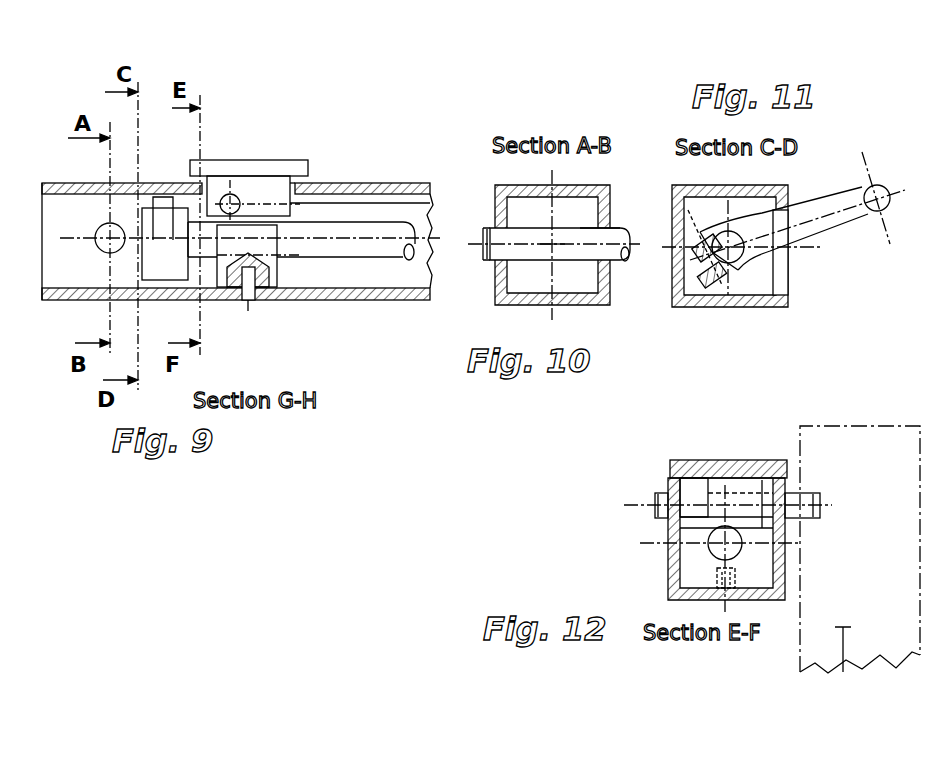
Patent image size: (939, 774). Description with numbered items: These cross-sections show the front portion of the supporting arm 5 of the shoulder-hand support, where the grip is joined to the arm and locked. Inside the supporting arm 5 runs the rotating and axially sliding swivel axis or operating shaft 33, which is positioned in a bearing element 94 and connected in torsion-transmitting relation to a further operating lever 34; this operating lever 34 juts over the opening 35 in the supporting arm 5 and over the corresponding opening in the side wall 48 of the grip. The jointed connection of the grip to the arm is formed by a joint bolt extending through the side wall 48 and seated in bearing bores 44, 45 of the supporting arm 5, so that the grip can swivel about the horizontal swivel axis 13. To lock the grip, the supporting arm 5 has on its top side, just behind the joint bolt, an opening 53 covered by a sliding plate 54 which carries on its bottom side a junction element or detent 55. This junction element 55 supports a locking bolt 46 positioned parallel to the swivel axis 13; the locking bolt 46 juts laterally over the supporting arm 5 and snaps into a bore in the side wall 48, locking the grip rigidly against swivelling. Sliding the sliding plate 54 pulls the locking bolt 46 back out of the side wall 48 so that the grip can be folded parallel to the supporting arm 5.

In FIG. 9, the supporting arm 5 is at (383, 183).
In FIG. 10, the supporting arm 5 is at (495, 298).
In FIG. 11, the supporting arm 5 is at (786, 300).
In FIG. 12, the supporting arm 5 is at (668, 580).
In FIG. 9, the swivel axis 13 is at (102, 243).
In FIG. 10, the swivel axis 13 is at (572, 253).
In FIG. 9, the swivel axis or operating shaft 33 is at (347, 250).
In FIG. 11, the swivel axis or operating shaft 33 is at (741, 271).
In FIG. 9, the operating lever 34 is at (155, 200).
In FIG. 11, the operating lever 34 is at (862, 190).
In FIG. 11, the opening 35 is at (779, 268).
In FIG. 10, the bearing bore 44 is at (490, 235).
In FIG. 10, the bearing bore 45 is at (607, 226).
In FIG. 9, the locking bolt 46 is at (226, 176).
In FIG. 12, the locking bolt 46 is at (802, 500).
In FIG. 12, the side wall 48 is at (860, 568).
In FIG. 9, the opening 53 is at (338, 183).
In FIG. 12, the opening 53 is at (695, 488).
In FIG. 9, the sliding plate 54 is at (262, 170).
In FIG. 12, the sliding plate 54 is at (738, 470).
In FIG. 9, the junction element or detent 55 is at (431, 205).
In FIG. 12, the junction element or detent 55 is at (762, 510).
In FIG. 9, the bearing element 94 is at (272, 262).